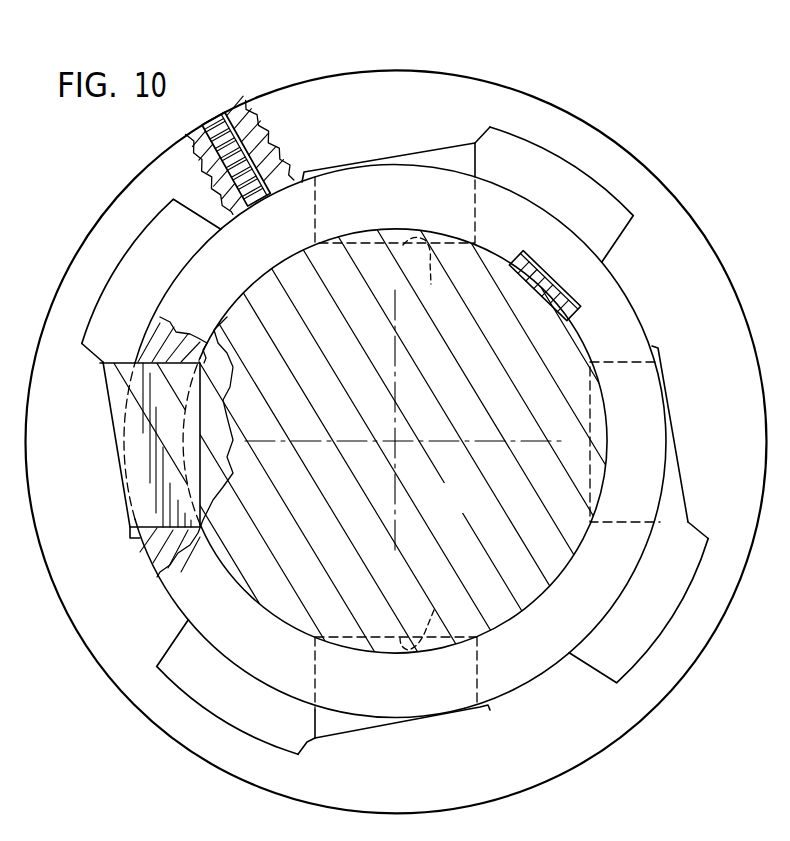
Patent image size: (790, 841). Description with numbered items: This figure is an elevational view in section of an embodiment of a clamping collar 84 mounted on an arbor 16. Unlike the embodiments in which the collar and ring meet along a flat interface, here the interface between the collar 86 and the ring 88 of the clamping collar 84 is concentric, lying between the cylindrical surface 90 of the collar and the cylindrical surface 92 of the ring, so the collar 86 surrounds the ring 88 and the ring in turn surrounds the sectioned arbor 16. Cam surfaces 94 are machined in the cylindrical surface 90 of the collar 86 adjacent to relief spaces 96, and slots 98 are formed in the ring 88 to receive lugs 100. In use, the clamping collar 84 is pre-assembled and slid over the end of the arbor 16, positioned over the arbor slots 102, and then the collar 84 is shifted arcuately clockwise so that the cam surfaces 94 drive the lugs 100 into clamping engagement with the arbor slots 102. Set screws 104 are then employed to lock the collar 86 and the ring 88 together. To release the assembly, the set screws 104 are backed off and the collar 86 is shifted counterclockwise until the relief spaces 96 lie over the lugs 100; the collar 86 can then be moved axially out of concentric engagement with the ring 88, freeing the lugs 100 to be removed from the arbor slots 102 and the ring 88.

The arbor 16 is at (466, 512).
The clamping collar 84 is at (547, 88).
The collar 86 is at (595, 142).
The ring 88 is at (622, 313).
The cylindrical surface 90 is at (537, 672).
The cylindrical surface 92 is at (518, 690).
The cam surfaces 94 is at (448, 150).
The relief spaces 96 is at (612, 225).
The slots 98 is at (318, 188).
The lugs 100 is at (430, 160).
The arbor slots 102 is at (233, 481).
The set screws 104 is at (260, 163).